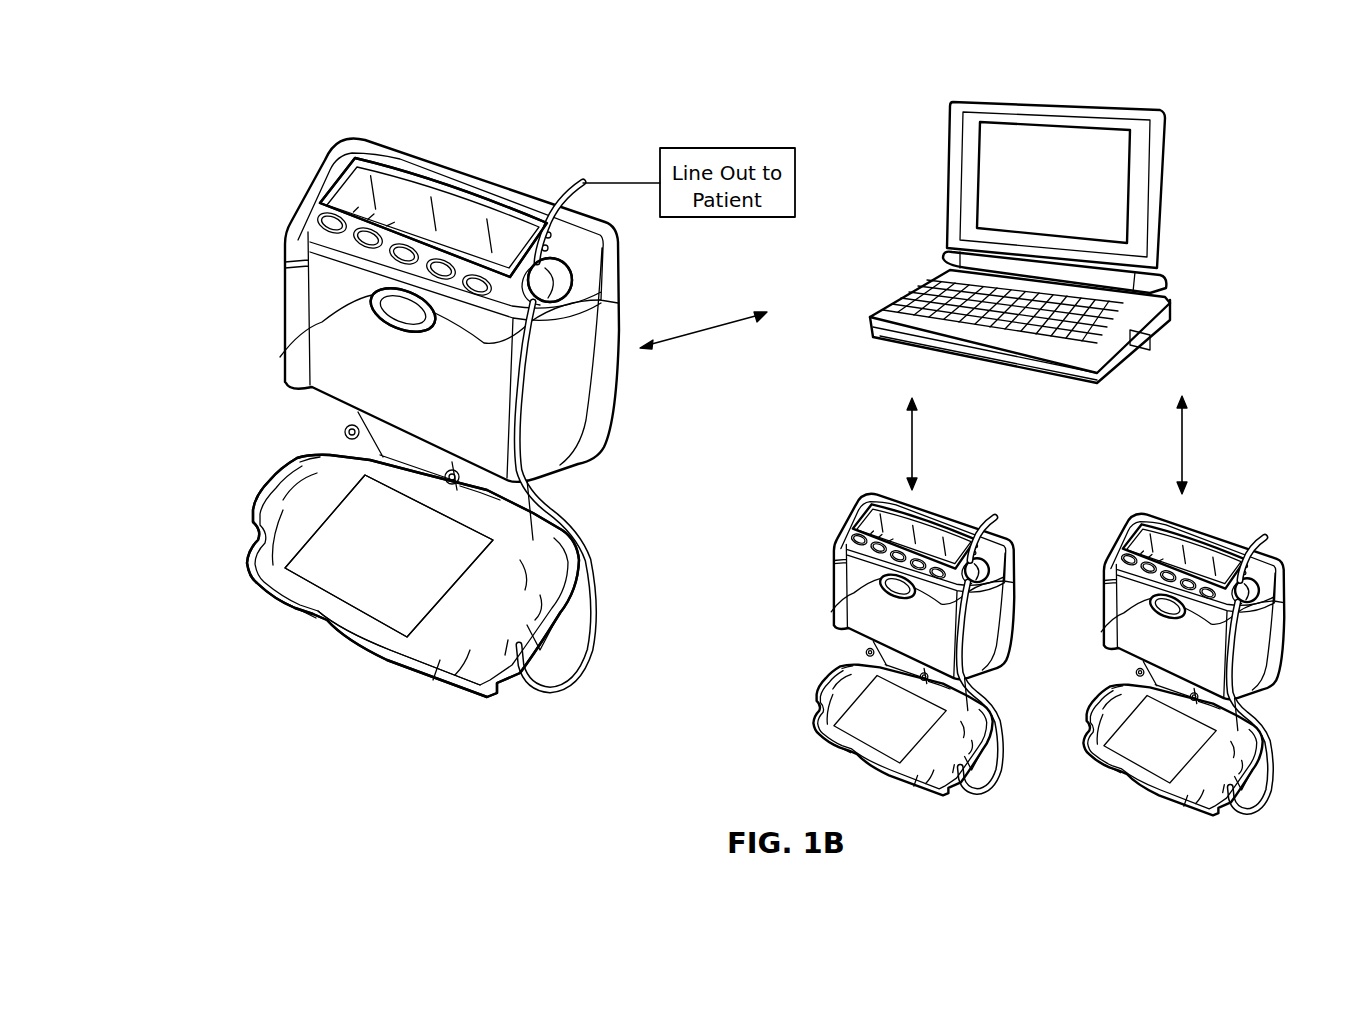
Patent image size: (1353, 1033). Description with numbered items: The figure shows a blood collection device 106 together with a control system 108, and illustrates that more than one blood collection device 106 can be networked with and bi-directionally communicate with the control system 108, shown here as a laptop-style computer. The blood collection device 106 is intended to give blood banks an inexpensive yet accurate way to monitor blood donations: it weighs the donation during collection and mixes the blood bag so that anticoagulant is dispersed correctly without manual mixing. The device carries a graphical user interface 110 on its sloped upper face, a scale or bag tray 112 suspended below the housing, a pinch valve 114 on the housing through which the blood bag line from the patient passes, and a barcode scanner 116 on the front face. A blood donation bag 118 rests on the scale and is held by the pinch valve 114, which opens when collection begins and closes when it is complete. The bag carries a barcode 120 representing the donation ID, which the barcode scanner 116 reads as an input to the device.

The blood collection device 106 is at (732, 455).
The control system 108 is at (968, 180).
The graphical user interface 110 is at (400, 197).
The scale or bag tray 112 is at (407, 662).
The pinch valve 114 is at (556, 273).
The barcode scanner 116 is at (282, 357).
The blood donation bag 118 is at (287, 490).
The barcode 120 is at (320, 550).